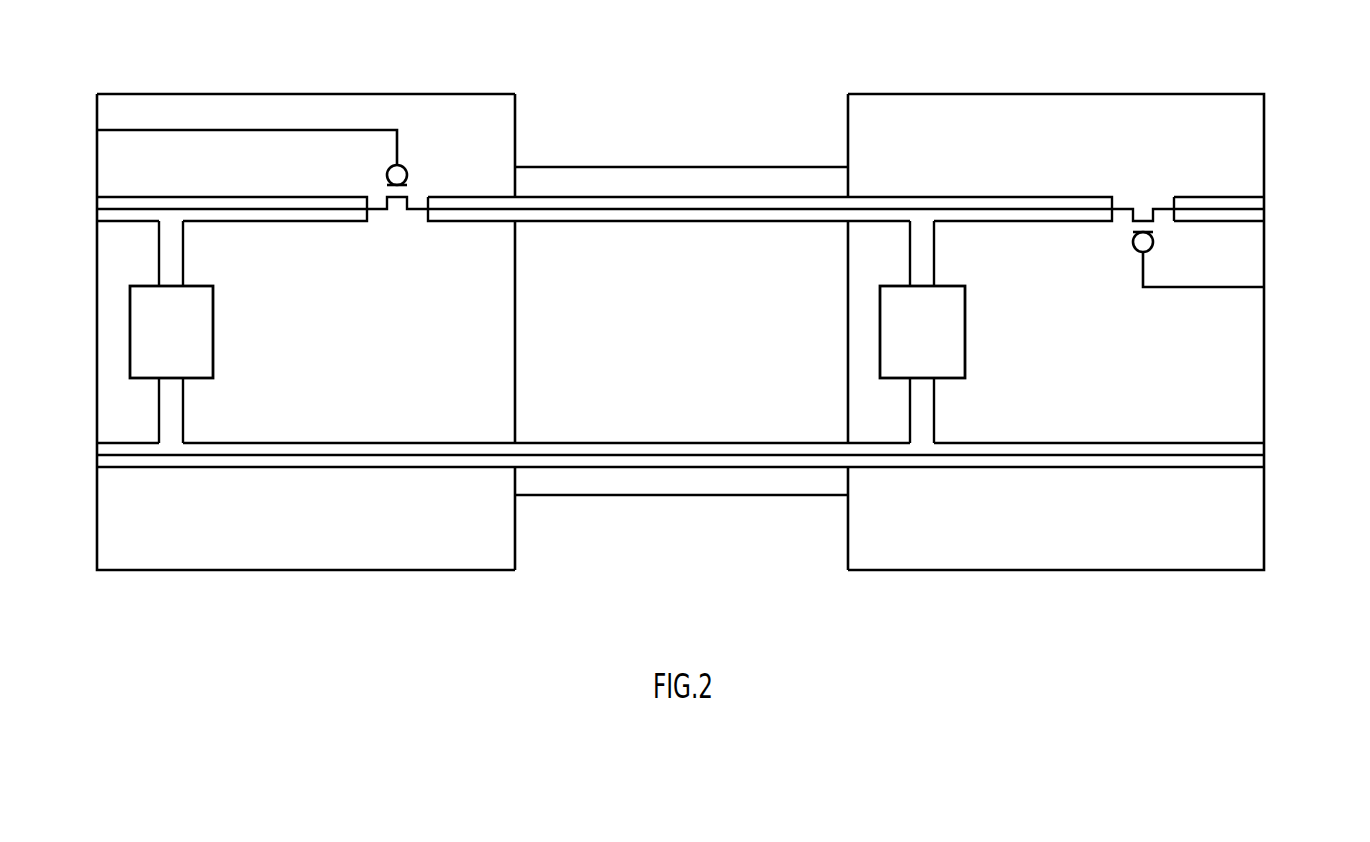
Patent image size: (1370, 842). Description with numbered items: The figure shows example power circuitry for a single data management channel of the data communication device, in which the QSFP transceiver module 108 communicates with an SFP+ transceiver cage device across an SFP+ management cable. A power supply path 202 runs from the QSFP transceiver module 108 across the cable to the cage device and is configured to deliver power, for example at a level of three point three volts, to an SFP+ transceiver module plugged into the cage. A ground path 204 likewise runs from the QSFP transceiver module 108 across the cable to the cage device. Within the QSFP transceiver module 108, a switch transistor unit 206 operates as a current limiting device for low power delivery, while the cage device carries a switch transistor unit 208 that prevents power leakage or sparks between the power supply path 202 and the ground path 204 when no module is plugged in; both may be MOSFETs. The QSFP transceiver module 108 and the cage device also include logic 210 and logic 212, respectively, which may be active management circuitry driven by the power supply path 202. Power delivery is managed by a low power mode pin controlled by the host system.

The QSFP transceiver module 108 is at (342, 94).
The power supply path 202 is at (1220, 197).
The ground path 204 is at (1222, 467).
The switch transistor unit 206 is at (417, 187).
The switch transistor unit 208 is at (1143, 195).
The logic 210 is at (213, 305).
The logic 212 is at (965, 307).